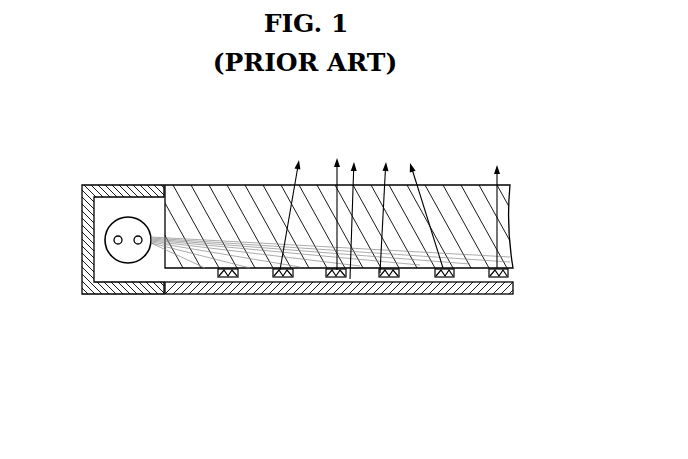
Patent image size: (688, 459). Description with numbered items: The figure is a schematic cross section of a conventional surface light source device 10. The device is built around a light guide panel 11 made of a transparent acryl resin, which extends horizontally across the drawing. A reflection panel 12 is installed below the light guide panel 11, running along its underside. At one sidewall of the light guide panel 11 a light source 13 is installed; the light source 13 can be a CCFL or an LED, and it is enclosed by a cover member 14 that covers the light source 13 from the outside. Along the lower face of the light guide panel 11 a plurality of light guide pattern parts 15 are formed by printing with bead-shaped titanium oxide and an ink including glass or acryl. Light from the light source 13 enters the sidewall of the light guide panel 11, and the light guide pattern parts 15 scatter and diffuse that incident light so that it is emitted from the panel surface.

The surface light source device 10 is at (180, 144).
The light guide panel 11 is at (453, 192).
The reflection panel 12 is at (515, 292).
The light source 13 is at (128, 217).
The cover member 14 is at (82, 239).
The light guide pattern parts 15 is at (510, 272).